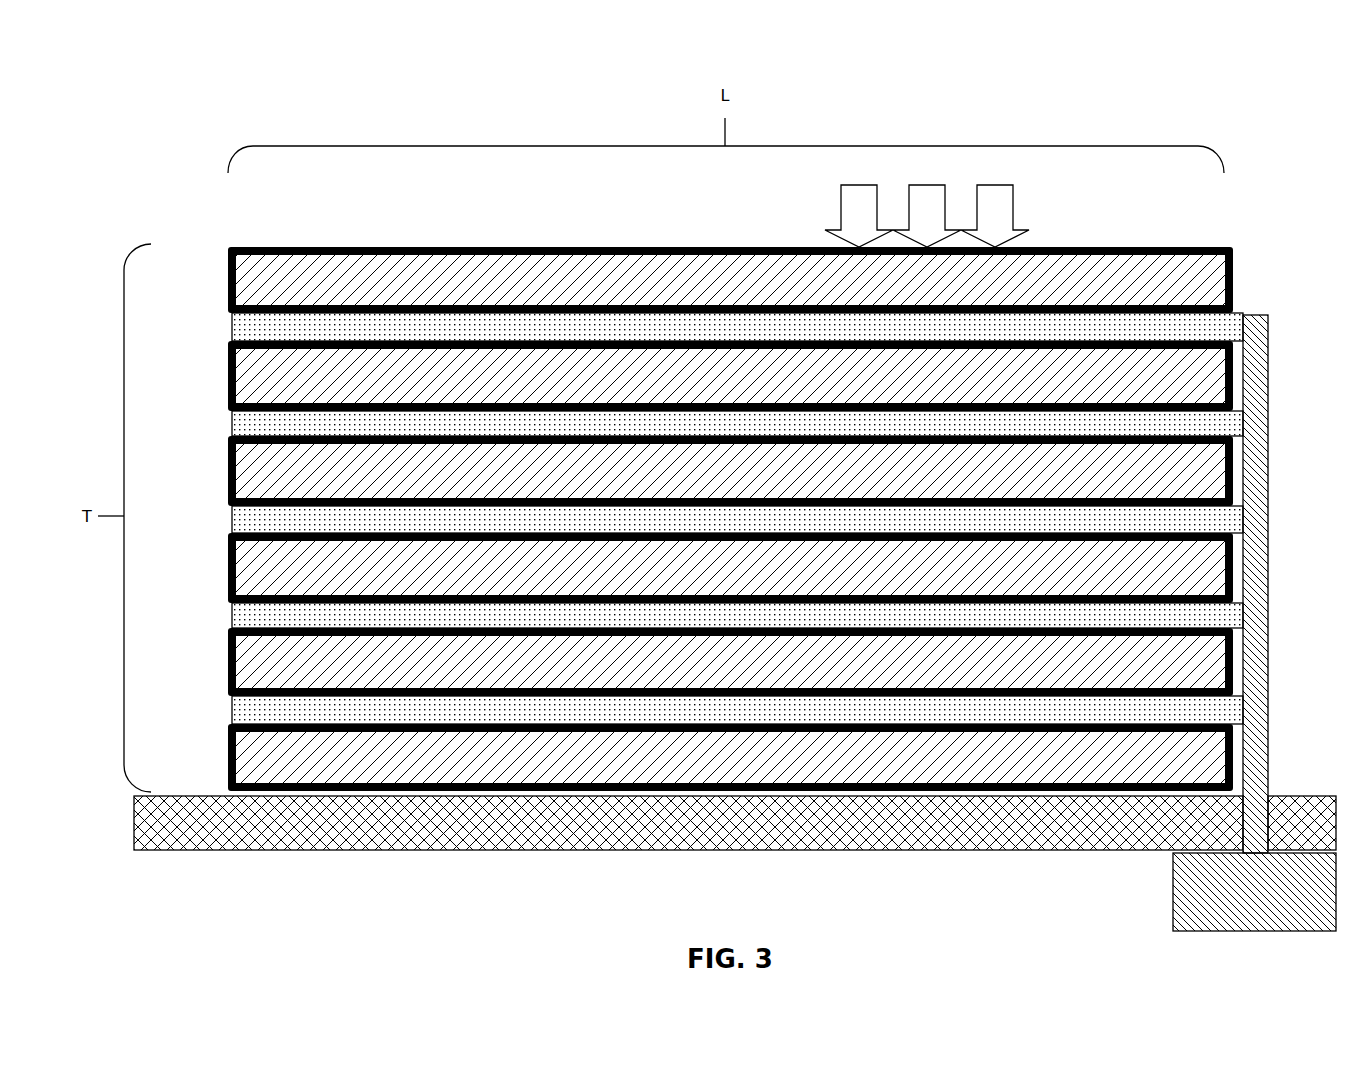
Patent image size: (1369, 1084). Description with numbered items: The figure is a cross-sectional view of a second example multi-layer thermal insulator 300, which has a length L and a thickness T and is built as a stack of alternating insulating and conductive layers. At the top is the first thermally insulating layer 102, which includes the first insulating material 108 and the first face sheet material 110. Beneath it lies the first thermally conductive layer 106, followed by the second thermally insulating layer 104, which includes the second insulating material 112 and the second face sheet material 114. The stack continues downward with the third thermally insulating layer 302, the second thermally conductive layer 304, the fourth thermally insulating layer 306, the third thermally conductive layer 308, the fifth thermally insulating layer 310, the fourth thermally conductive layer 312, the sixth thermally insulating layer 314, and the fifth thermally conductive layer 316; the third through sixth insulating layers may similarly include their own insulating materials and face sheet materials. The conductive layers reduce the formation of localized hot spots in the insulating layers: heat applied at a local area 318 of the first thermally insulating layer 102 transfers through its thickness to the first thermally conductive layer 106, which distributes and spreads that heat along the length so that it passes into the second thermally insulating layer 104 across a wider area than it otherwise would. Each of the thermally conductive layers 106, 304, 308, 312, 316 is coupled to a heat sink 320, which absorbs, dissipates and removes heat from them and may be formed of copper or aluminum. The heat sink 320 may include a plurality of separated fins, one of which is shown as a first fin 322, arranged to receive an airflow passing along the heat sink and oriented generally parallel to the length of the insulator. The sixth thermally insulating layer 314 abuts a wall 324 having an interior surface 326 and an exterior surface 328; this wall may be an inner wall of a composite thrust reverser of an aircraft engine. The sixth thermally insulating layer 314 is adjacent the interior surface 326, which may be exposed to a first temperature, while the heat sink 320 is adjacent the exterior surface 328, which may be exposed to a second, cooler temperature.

The multi-layer thermal insulator 300 is at (1150, 83).
The first thermally insulating layer 102 is at (220, 264).
The second thermally insulating layer 104 is at (220, 360).
The first thermally conductive layer 106 is at (224, 312).
The first insulating material 108 is at (491, 272).
The first face sheet material 110 is at (398, 240).
The second insulating material 112 is at (767, 365).
The second face sheet material 114 is at (648, 393).
The third thermally insulating layer 302 is at (220, 457).
The second thermally conductive layer 304 is at (224, 410).
The fourth thermally insulating layer 306 is at (220, 549).
The third thermally conductive layer 308 is at (224, 502).
The fifth thermally insulating layer 310 is at (220, 647).
The fourth thermally conductive layer 312 is at (224, 597).
The sixth thermally insulating layer 314 is at (220, 745).
The fifth thermally conductive layer 316 is at (224, 692).
The local area 318 is at (1005, 202).
The heat sink 320 is at (1165, 860).
The first fin 322 is at (1165, 905).
The wall 324 is at (627, 842).
The interior surface 326 is at (690, 790).
The exterior surface 328 is at (762, 842).